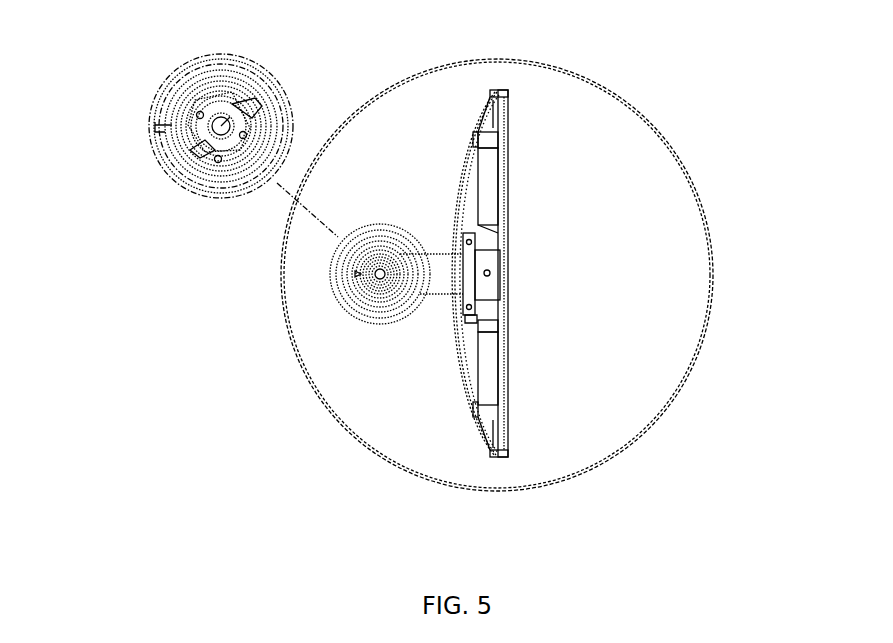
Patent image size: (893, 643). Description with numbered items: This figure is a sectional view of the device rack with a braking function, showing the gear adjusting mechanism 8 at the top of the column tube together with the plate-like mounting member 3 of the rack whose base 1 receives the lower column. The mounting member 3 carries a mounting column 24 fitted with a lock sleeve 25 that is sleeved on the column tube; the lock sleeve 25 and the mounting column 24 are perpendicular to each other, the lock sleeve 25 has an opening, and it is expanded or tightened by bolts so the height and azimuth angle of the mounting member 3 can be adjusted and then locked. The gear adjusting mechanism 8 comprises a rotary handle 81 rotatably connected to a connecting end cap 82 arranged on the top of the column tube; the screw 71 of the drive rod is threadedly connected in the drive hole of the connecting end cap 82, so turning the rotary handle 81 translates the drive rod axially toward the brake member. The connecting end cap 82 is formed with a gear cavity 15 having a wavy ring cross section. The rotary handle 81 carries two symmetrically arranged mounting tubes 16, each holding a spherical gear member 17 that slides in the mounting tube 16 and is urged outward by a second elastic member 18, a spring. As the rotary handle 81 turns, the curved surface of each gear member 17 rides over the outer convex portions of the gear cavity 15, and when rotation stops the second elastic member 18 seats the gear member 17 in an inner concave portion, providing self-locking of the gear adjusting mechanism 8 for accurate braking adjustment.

The base 1 is at (604, 151).
The mounting member 3 is at (457, 385).
The mounting column 24 is at (390, 327).
The lock sleeve 25 is at (219, 124).
The mounting tube 16 is at (192, 96).
The second elastic member 18 is at (168, 157).
The gear adjusting mechanism 8 is at (90, 207).
The rotary handle 81 is at (202, 172).
The connecting end cap 82 is at (202, 190).
The gear cavity 15 is at (246, 60).
The screw 71 is at (260, 58).
The gear member 17 is at (255, 88).